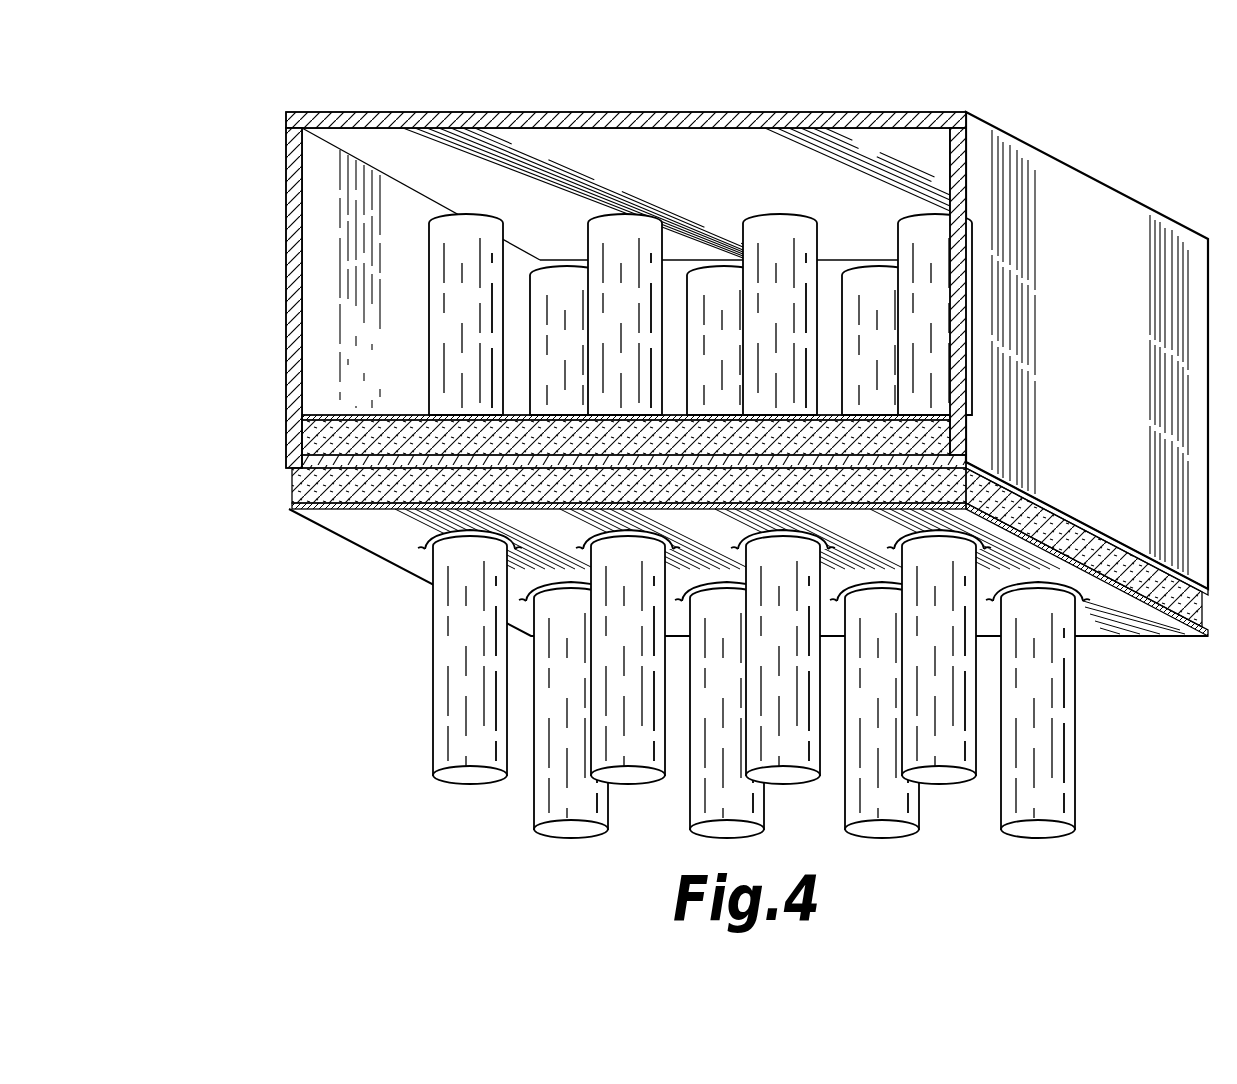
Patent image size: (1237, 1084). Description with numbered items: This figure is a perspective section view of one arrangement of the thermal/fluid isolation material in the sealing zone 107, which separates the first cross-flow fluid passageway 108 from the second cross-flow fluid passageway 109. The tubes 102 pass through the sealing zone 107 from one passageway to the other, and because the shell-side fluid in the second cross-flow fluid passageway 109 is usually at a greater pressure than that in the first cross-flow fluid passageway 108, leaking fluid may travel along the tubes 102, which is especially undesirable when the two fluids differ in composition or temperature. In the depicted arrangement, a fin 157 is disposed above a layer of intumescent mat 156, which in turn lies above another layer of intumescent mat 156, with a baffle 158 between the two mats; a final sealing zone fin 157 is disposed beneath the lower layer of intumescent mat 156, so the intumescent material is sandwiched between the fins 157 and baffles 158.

The first cross-flow fluid passageway 108 is at (700, 135).
The sealing zone 107 is at (687, 501).
The fin 157 is at (319, 415).
The intumescent mat 156 is at (317, 439).
The baffle 158 is at (300, 460).
The second cross-flow fluid passageway 109 is at (308, 738).
The tubes 102 is at (487, 778).